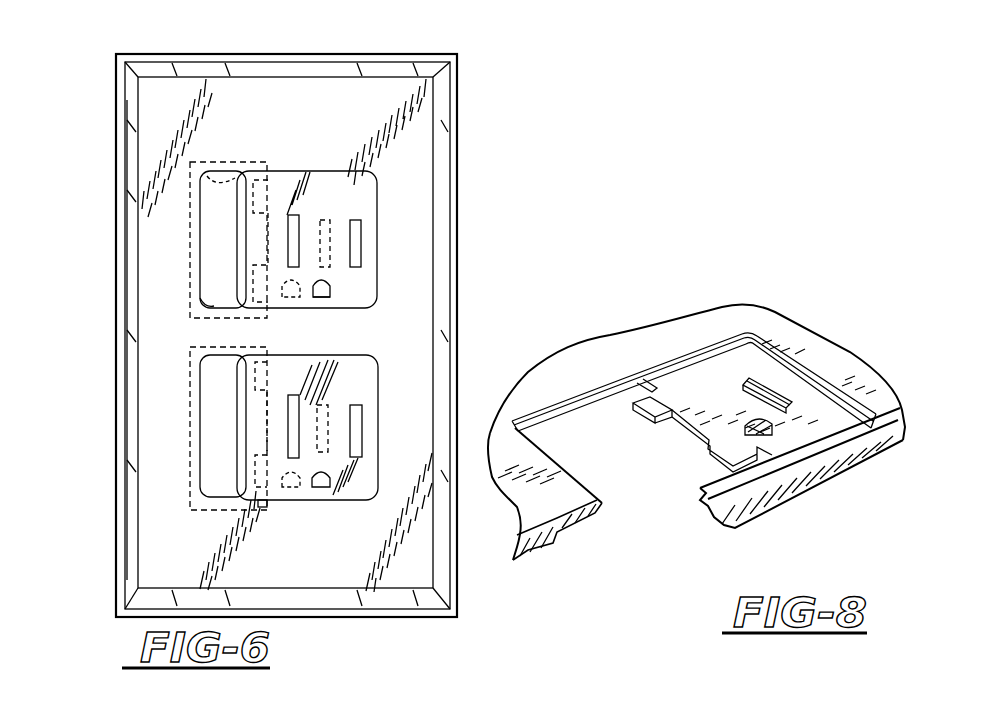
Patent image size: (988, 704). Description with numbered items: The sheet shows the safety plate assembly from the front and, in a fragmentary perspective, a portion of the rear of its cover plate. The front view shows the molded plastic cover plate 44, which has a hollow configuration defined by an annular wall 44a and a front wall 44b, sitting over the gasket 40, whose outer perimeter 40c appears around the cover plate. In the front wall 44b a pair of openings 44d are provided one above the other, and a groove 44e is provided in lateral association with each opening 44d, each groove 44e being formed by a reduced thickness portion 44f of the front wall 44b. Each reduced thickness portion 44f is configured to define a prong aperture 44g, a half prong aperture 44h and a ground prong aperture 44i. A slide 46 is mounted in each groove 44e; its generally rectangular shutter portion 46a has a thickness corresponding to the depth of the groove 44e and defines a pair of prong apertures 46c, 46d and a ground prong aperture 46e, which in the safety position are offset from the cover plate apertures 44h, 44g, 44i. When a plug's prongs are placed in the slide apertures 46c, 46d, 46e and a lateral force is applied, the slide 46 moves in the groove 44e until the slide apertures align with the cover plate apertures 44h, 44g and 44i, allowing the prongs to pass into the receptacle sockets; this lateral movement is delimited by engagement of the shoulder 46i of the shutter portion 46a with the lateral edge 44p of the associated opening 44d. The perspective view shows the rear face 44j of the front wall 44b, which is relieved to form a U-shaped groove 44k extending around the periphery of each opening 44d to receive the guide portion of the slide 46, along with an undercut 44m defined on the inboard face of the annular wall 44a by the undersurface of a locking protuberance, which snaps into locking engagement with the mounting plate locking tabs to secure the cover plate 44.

In FIG. 6, the gasket 40 is at (466, 197).
In FIG. 6, the outer perimeter of the gasket 40c is at (460, 90).
In FIG. 6, the cover plate 44 is at (450, 259).
In FIG. 6, the annular wall 44a is at (126, 150).
In FIG. 6, the front wall 44b is at (350, 540).
In FIG. 6, the opening 44d is at (210, 289).
In FIG. 8, the opening 44d is at (600, 380).
In FIG. 8, the groove 44e is at (681, 358).
In FIG. 8, the reduced thickness portion 44f is at (717, 395).
In FIG. 8, the prong aperture 44g is at (775, 383).
In FIG. 8, the half prong aperture 44h is at (680, 423).
In FIG. 8, the ground prong aperture 44i is at (772, 420).
In FIG. 8, the rear face of the front wall 44j is at (537, 553).
In FIG. 6, the U-shaped groove 44k is at (240, 165).
In FIG. 8, the U-shaped groove 44k is at (703, 506).
In FIG. 6, the undercut 44m is at (330, 290).
In FIG. 8, the undercut 44m is at (773, 347).
In FIG. 6, the lateral edge of the opening 44p is at (205, 300).
In FIG. 8, the lateral edge of the opening 44p is at (548, 468).
In FIG. 6, the slide 46 is at (280, 329).
In FIG. 6, the shutter portion 46a is at (358, 205).
In FIG. 6, the prong aperture 46c is at (297, 232).
In FIG. 6, the prong aperture 46d is at (360, 235).
In FIG. 6, the ground prong aperture 46e is at (320, 290).
In FIG. 6, the shoulder 46i is at (236, 214).